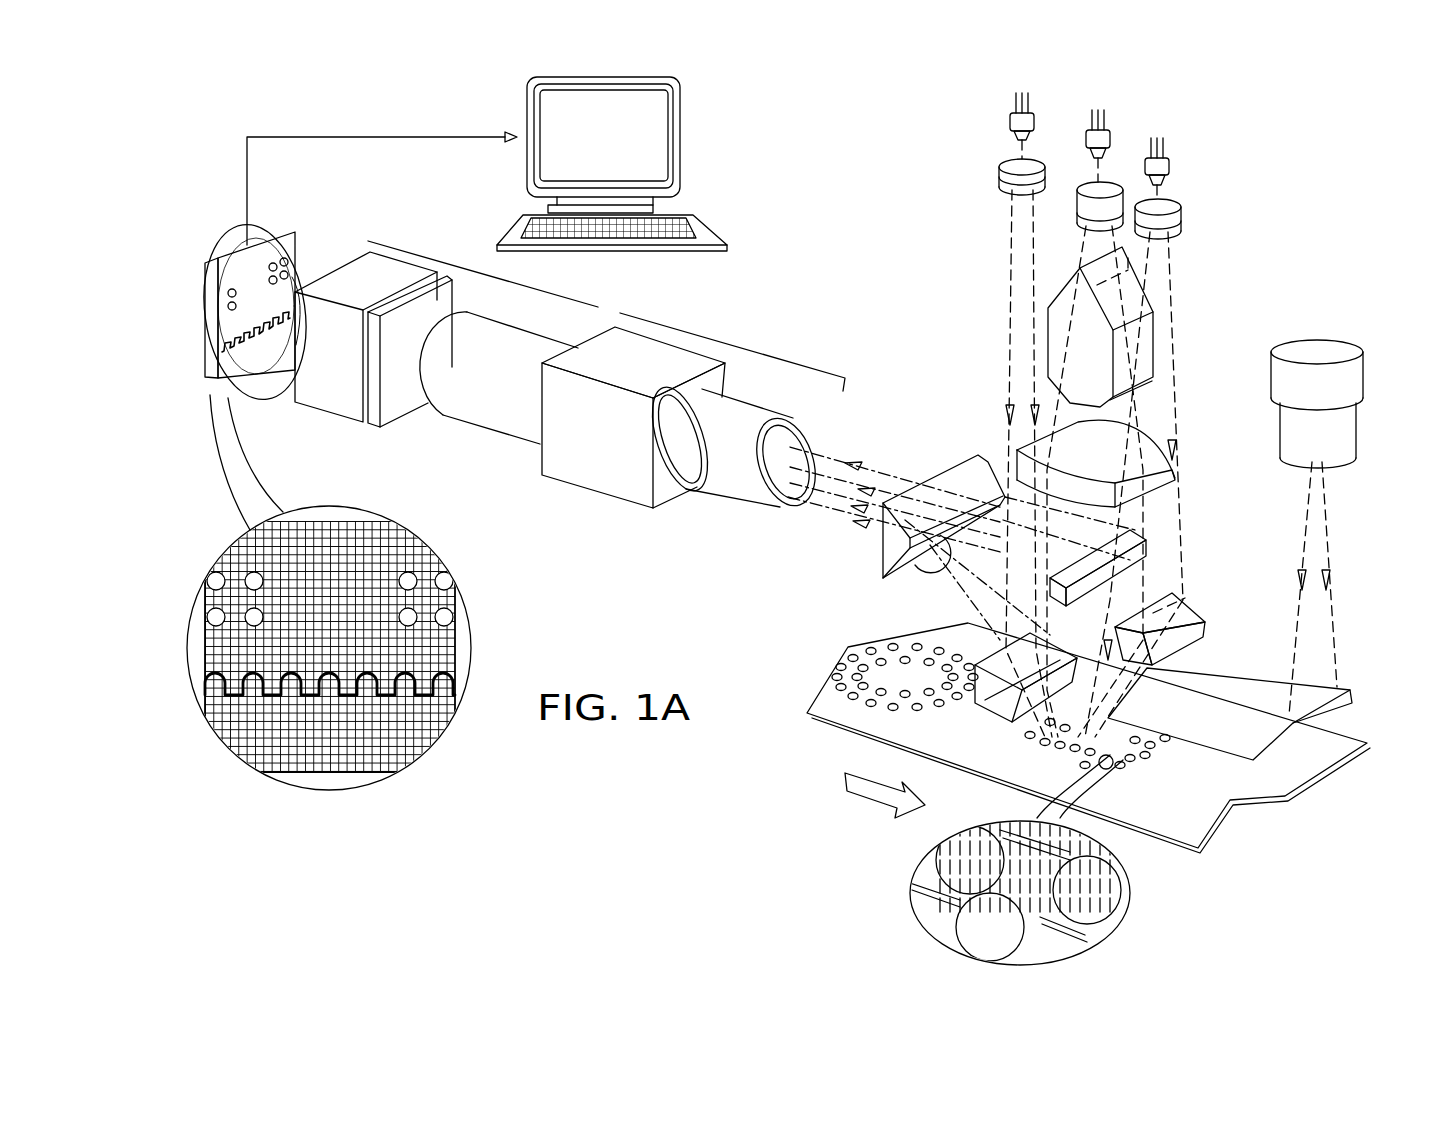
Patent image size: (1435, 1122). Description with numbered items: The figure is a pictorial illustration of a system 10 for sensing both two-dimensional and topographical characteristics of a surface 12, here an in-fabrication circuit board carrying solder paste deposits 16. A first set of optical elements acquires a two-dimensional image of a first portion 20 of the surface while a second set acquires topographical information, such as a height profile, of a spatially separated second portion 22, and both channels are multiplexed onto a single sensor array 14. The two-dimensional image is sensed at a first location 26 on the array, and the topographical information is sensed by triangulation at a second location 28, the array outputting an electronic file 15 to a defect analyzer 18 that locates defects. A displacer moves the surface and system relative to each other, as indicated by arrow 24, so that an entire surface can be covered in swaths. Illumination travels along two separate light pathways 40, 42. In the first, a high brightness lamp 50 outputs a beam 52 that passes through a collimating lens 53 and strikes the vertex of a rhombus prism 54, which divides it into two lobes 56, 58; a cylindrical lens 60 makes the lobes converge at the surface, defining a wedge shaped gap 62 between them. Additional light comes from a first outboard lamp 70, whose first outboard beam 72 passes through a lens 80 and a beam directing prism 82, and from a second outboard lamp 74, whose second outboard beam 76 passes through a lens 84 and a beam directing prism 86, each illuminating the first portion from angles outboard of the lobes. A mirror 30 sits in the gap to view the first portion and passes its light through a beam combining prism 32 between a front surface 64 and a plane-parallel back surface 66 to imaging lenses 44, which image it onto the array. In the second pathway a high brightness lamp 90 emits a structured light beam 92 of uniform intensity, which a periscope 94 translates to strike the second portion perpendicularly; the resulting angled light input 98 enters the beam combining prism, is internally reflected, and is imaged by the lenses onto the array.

The system 10 is at (887, 192).
The surface 12 is at (850, 737).
The sensor array 14 is at (217, 260).
The electronic file 15 is at (340, 110).
The solder paste deposits 16 is at (1140, 762).
The defect analyzer 18 is at (680, 118).
The first portion 20 is at (1024, 751).
The second portion 22 is at (1104, 783).
The arrow 24 is at (848, 792).
The first location 26 is at (180, 286).
The second location 28 is at (173, 350).
The mirror 30 is at (1150, 545).
The beam combining prism 32 is at (882, 572).
The light pathway 40 is at (1212, 319).
The light pathway 42 is at (1357, 516).
The imaging lenses 44 is at (620, 313).
The high brightness lamp 50 is at (1110, 132).
The beam 52 is at (1102, 172).
The collimating lens 53 is at (1078, 204).
The rhombus prism 54 is at (1050, 305).
The lobe 56 is at (1155, 395).
The lobe 58 is at (1028, 396).
The cylindrical lens 60 is at (1018, 455).
The wedge shaped gap 62 is at (965, 463).
The front surface 64 is at (920, 578).
The back surface 66 is at (882, 555).
The first outboard lamp 70 is at (1033, 115).
The first outboard beam 72 is at (1026, 142).
The second outboard lamp 74 is at (1170, 160).
The second outboard beam 76 is at (1162, 200).
The lens 80 is at (999, 185).
The beam directing prism 82 is at (998, 692).
The lens 84 is at (1182, 229).
The beam directing prism 86 is at (1195, 620).
The high brightness lamp 90 is at (1318, 342).
The structured light beam 92 is at (1312, 528).
The periscope 94 is at (1240, 668).
The angled light input 98 is at (953, 624).